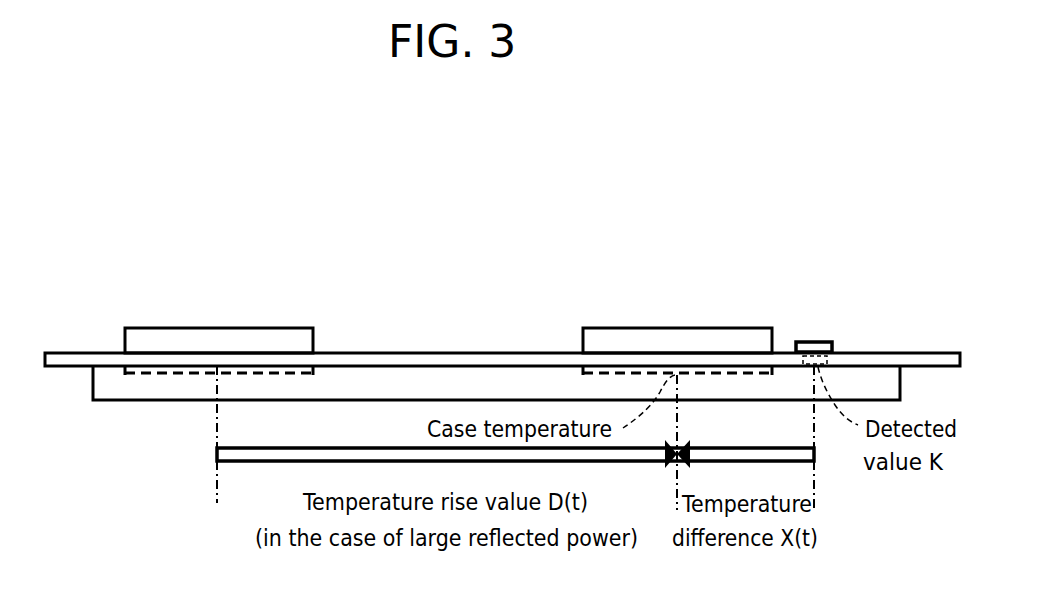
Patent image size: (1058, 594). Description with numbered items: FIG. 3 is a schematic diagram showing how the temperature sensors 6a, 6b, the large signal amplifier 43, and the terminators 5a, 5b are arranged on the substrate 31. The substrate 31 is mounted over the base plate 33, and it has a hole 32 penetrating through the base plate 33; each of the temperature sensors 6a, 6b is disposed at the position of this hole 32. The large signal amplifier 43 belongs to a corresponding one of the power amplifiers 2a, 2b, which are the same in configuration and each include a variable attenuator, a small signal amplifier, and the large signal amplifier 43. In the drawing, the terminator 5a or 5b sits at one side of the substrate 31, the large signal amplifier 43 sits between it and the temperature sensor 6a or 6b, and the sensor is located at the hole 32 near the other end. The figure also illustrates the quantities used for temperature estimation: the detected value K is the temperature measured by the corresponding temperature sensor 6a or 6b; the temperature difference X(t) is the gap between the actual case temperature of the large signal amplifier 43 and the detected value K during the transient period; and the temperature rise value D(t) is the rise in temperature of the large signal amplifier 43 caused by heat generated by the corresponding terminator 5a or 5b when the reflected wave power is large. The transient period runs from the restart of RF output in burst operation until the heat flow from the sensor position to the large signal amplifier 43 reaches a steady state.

The substrate 31 is at (422, 352).
The hole 32 is at (833, 352).
The base plate 33 is at (95, 400).
The terminator 5a is at (227, 303).
The terminator 5b is at (260, 328).
The large signal amplifier 43 is at (677, 303).
The power amplifier 2a is at (677, 303).
The power amplifier 2b is at (623, 328).
The temperature sensor 6a is at (842, 291).
The temperature sensor 6b is at (820, 341).